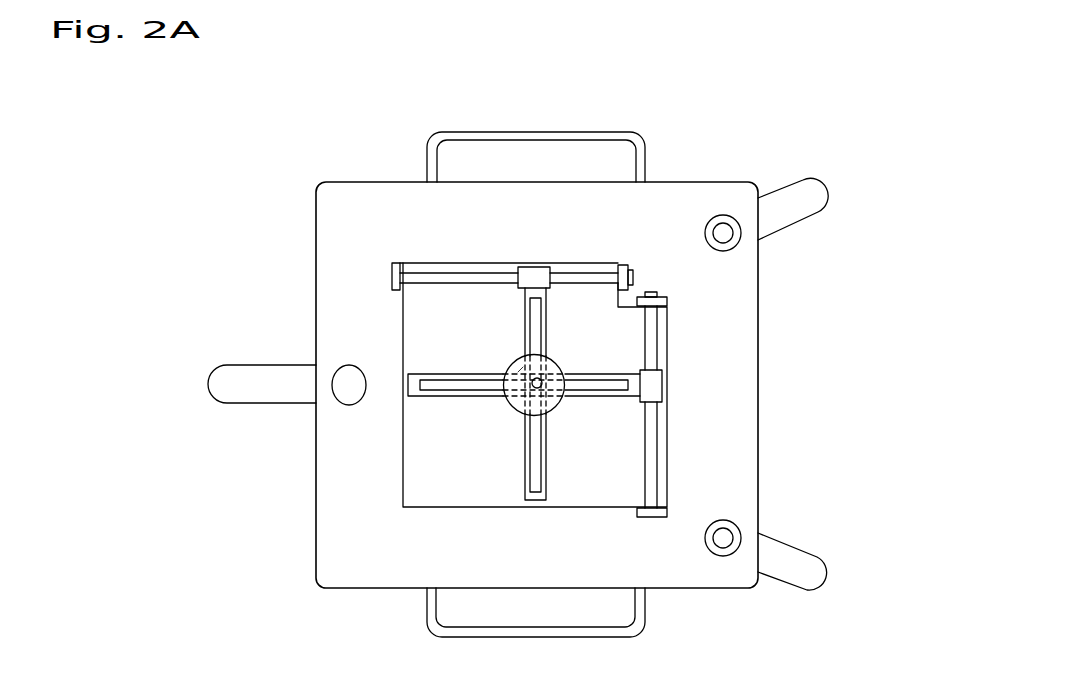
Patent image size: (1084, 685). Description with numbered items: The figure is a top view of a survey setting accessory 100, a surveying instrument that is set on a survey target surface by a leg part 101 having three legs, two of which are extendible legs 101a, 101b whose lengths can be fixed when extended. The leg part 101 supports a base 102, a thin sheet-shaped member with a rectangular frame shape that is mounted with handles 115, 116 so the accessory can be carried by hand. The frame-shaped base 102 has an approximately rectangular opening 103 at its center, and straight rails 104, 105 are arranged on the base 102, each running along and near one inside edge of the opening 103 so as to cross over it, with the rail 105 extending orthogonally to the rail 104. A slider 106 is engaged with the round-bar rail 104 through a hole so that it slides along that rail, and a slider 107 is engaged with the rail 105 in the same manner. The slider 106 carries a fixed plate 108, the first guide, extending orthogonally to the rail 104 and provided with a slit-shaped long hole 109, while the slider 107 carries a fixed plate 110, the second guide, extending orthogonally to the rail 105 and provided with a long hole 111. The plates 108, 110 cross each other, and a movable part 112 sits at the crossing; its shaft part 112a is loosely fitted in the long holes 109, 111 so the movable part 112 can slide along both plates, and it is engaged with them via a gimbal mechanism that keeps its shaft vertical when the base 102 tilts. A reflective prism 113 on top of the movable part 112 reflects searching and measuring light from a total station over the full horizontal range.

The survey setting accessory 100 is at (514, 368).
The leg part 101 is at (193, 399).
The extendible leg 101a is at (793, 560).
The extendible leg 101b is at (812, 202).
The base 102 is at (742, 320).
The opening 103 is at (628, 433).
The rail 104 is at (437, 270).
The rail 105 is at (657, 470).
The slider 106 is at (533, 275).
The slider 107 is at (650, 387).
The plate 108 is at (390, 394).
The long hole 109 is at (533, 467).
The plate 110 is at (448, 311).
The long hole 111 is at (433, 385).
The movable part 112 is at (575, 382).
The shaft part 112a is at (537, 388).
The reflective prism 113 is at (515, 367).
The handle 115 is at (508, 132).
The handle 116 is at (645, 608).